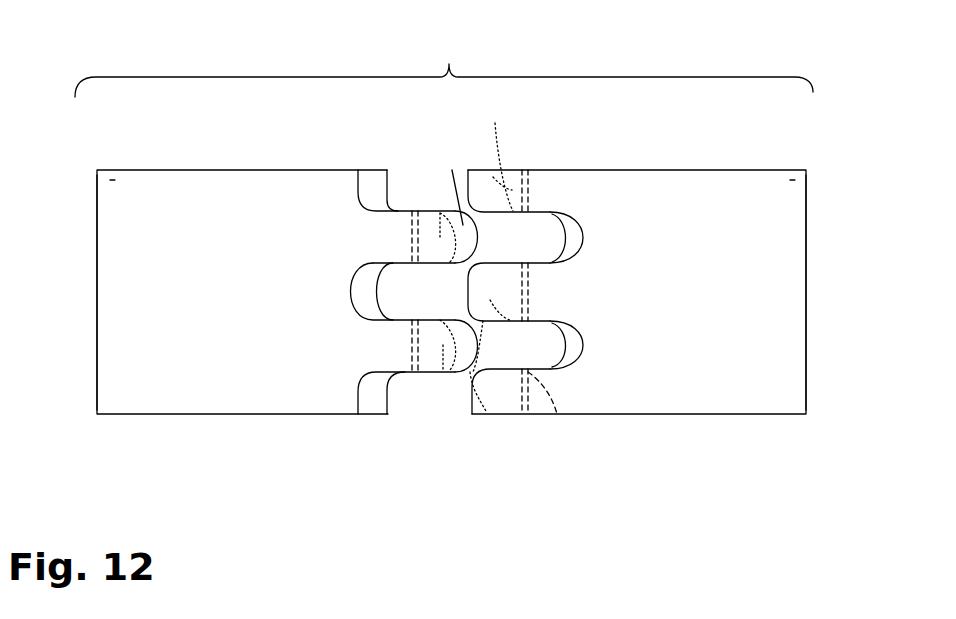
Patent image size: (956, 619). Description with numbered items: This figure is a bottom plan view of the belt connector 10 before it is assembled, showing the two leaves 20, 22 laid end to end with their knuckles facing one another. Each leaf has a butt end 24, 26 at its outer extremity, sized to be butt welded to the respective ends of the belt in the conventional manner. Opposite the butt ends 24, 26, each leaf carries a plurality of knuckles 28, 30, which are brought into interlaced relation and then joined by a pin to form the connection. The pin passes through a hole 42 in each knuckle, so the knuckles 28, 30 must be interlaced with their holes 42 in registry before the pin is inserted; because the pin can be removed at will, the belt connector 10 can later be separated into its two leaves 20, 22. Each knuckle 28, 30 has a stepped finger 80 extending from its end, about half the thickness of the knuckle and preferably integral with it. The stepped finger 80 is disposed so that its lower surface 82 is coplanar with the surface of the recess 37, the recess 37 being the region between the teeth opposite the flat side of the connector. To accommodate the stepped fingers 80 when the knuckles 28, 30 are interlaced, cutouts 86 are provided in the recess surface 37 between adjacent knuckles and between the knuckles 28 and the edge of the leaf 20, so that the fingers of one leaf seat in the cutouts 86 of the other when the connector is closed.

The belt connector 10 is at (444, 63).
The leaf 20 is at (192, 416).
The leaf 22 is at (684, 416).
The butt end 24 is at (95, 235).
The butt end 26 is at (810, 232).
The knuckle 28 is at (440, 213).
The knuckle 30 is at (490, 300).
The recess 37 is at (200, 190).
The hole 42 is at (412, 231).
The stepped finger 80 is at (476, 165).
The lower surface 82 is at (477, 185).
The cutout 86 is at (372, 190).